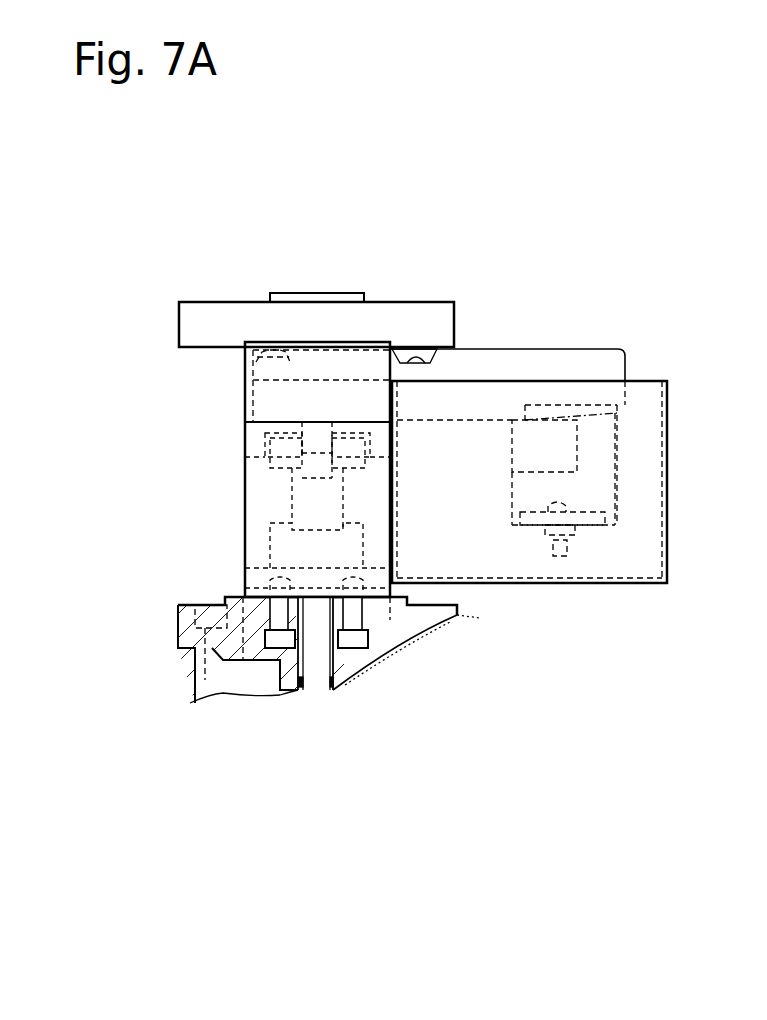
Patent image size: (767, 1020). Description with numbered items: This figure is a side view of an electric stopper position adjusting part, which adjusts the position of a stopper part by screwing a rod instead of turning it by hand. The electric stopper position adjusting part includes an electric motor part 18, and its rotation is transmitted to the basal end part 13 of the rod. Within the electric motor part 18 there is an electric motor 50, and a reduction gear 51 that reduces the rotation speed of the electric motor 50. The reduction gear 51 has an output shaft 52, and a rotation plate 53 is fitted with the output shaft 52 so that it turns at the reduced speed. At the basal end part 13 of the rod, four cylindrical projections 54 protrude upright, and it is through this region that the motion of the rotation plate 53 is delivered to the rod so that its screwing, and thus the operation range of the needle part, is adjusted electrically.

The basal end part 13 is at (247, 580).
The electric motor part 18 is at (647, 380).
The electric motor 50 is at (603, 488).
The reduction gear 51 is at (525, 363).
The output shaft 52 is at (263, 445).
The rotation plate 53 is at (300, 498).
The cylindrical projections 54 is at (280, 552).